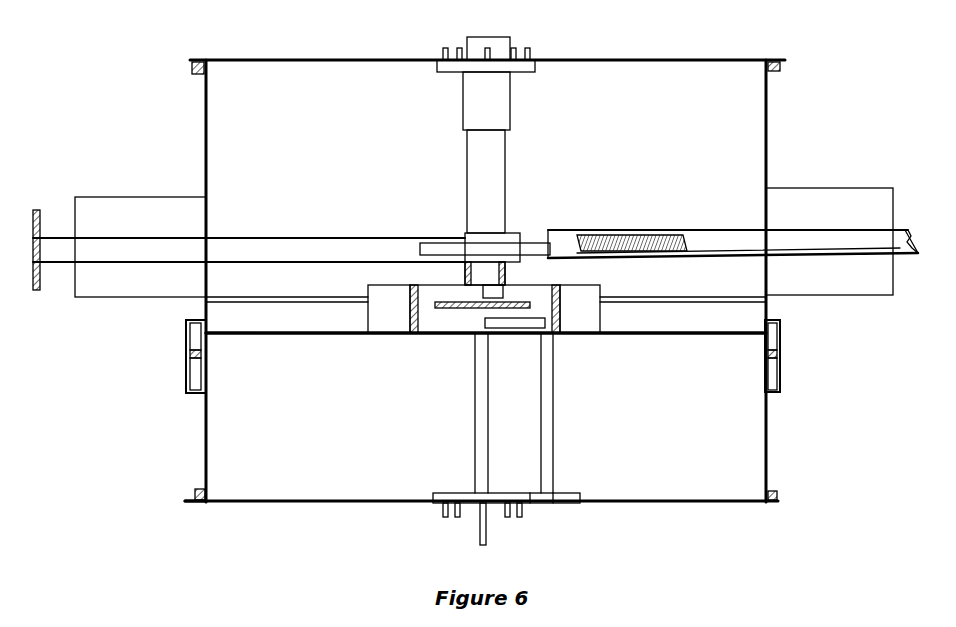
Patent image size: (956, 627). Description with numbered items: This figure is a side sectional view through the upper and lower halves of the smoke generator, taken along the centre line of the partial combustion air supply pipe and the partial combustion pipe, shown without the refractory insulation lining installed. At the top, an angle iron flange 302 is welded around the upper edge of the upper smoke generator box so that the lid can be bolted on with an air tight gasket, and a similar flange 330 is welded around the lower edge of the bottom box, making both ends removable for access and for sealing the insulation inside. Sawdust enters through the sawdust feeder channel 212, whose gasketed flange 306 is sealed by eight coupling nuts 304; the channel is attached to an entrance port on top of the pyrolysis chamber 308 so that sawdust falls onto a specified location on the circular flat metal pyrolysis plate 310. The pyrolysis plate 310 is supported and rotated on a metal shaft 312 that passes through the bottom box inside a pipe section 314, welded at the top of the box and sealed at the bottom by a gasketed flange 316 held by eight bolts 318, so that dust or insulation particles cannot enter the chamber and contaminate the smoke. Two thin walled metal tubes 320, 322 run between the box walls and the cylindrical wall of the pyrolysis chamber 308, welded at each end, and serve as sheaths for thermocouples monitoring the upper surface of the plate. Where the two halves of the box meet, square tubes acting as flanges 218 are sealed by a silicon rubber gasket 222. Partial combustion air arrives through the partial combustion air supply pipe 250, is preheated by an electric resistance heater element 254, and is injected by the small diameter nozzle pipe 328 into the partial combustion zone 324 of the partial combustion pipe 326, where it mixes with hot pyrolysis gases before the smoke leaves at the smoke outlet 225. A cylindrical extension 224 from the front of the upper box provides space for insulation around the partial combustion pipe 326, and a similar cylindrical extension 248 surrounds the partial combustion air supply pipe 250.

The sawdust feeder channel 212 is at (470, 100).
The coupling nuts 304 is at (530, 47).
The gasketed flange 306 is at (531, 67).
The small diameter pipe 328 is at (533, 241).
The angle iron flange 302 is at (777, 66).
The partial combustion zone 324 is at (388, 243).
The smoke outlet 225 is at (38, 238).
The partial combustion pipe 326 is at (62, 264).
The cylindrical extension 224 is at (125, 299).
The cylindrical extension 248 is at (858, 189).
The partial combustion air supply pipe 250 is at (773, 230).
The electric resistance heater element 254 is at (915, 256).
The thin walled metal tube 320 is at (212, 300).
The thin walled metal tube 322 is at (740, 300).
The silicon rubber gasket 222 is at (190, 356).
The square tube flanges 218 is at (782, 336).
The pyrolysis chamber 308 is at (590, 312).
The pyrolysis plate 310 is at (541, 307).
The pyrolysis plate shaft 312 is at (490, 320).
The pipe section 314 is at (487, 413).
The gasketed flange 316 is at (428, 498).
The bolts 318 is at (522, 519).
The flange 330 is at (192, 493).